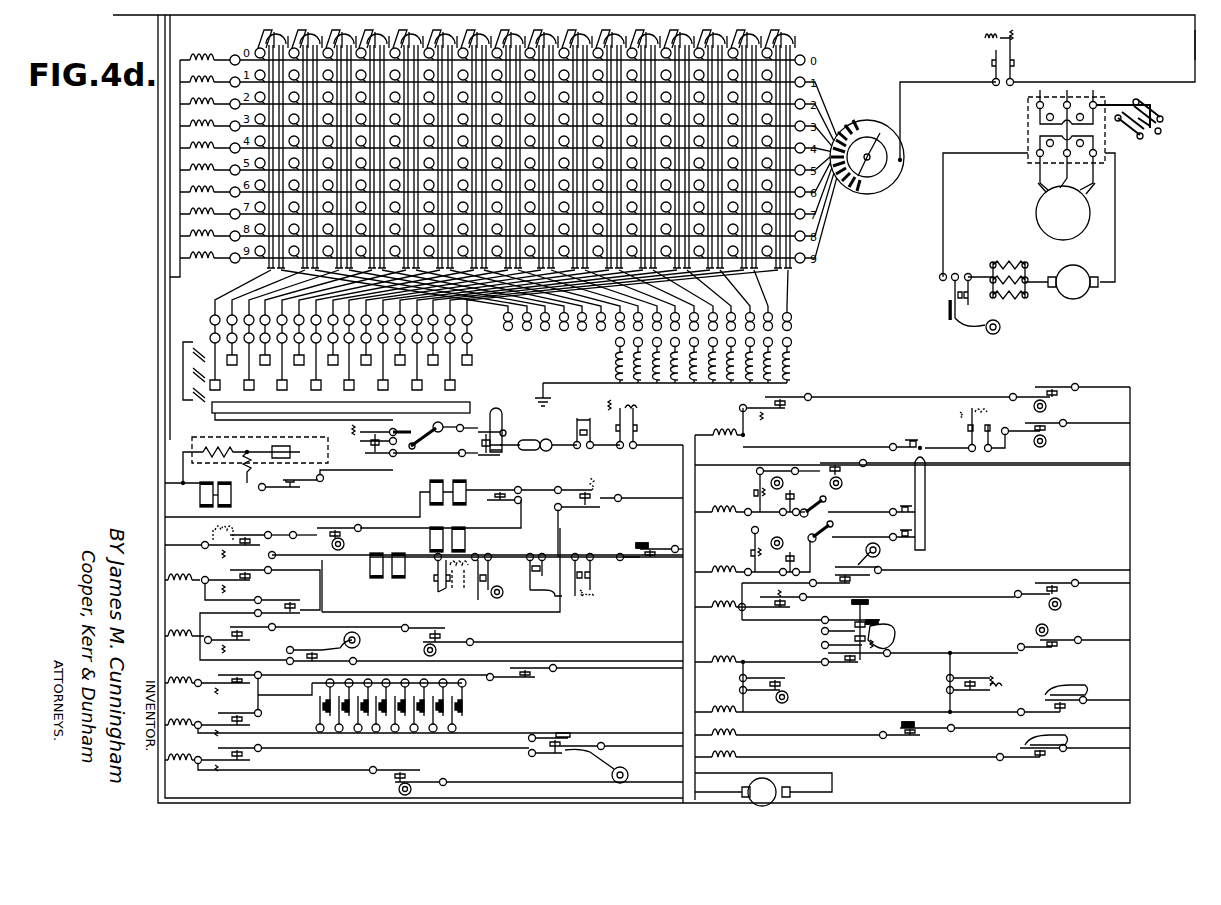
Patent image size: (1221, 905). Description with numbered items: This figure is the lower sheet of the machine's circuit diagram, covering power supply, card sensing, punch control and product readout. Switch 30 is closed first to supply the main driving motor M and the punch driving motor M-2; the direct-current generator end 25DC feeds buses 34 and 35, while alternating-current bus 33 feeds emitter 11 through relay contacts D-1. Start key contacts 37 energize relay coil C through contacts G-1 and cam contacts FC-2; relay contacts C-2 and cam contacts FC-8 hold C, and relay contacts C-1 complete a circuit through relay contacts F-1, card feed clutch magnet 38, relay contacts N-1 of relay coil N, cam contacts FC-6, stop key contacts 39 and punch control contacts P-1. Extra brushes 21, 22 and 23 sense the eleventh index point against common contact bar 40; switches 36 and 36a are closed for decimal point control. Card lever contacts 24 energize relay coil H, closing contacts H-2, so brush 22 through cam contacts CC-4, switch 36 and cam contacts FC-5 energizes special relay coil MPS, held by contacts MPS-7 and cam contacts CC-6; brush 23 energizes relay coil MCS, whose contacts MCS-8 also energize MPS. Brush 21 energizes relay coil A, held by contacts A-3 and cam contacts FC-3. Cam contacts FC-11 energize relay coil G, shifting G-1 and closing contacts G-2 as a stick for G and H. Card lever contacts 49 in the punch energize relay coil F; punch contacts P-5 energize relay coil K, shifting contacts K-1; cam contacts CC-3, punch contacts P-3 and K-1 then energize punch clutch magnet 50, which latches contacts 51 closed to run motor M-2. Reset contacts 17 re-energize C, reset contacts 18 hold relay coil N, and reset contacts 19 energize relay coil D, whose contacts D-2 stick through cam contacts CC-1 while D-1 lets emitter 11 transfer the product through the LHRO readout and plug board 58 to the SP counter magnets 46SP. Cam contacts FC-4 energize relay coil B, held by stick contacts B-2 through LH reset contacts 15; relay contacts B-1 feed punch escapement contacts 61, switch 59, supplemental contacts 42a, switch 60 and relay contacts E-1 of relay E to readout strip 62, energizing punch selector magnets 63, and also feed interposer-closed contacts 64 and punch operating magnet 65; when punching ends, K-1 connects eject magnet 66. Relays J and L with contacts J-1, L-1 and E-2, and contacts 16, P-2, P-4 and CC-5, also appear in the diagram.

The emitter 11 is at (888, 192).
The LH reset contacts 15 is at (560, 756).
The contact 16 is at (576, 740).
The reset contacts 17 is at (862, 578).
The multiplicand reset contacts 18 is at (296, 648).
The reset contacts 19 is at (335, 665).
The extra rate card brush 21 is at (904, 440).
The extra brush 22 is at (903, 501).
The extra brush 23 is at (918, 533).
The card lever contacts 24 is at (1068, 712).
The switch 30 is at (1162, 150).
The bus 33 is at (1195, 55).
The bus 34 is at (160, 32).
The bus 35 is at (165, 46).
The switch 36 is at (830, 506).
The switch 36a is at (836, 534).
The start key contacts 37 is at (895, 636).
The card feed clutch magnet 38 is at (370, 568).
The stop key contacts 39 is at (527, 580).
The common contact bar 40 is at (927, 488).
The supplemental contacts 42a is at (478, 430).
The SP counter magnets 46SP is at (795, 376).
The card lever contacts 49 is at (1045, 760).
The punch clutch magnet 50 is at (466, 540).
The contacts 51 is at (952, 303).
The plug board 58 is at (796, 334).
The switch 59 is at (540, 450).
The switch 60 is at (440, 440).
The punch escapement contacts 61 is at (585, 416).
The readout strip 62 is at (458, 383).
The punch selector magnets 63 is at (190, 172).
The contacts 64 is at (324, 484).
The punch operating magnet 65 is at (232, 500).
The eject magnet 66 is at (428, 495).
The D.C. end of generator 25DC is at (772, 798).
The LHRO readout LHRO is at (853, 43).
The main driving motor M is at (1065, 198).
The punch driving motor M-2 is at (1070, 292).
The relay contacts D-1 is at (1013, 68).
The relay contacts D-2 is at (258, 638).
The relay coil A is at (733, 446).
The relay contacts A-3 is at (795, 404).
The relay coil B is at (642, 408).
The relay contacts B-1 is at (640, 433).
The stick relay contacts B-2 is at (252, 758).
The relay coil C is at (735, 615).
The relay contacts C-1 is at (592, 571).
The relay contacts C-2 is at (785, 605).
The relay E is at (345, 434).
The relay contacts E-1 is at (386, 455).
The relay contact E-2 is at (262, 580).
The relay coil F is at (231, 526).
The relay contacts F-1 is at (280, 529).
The relay coil G is at (736, 655).
The relay contacts G-1 is at (848, 663).
The relay contacts G-2 is at (975, 683).
The relay coil H is at (992, 415).
The relay contacts H-2 is at (968, 438).
The relay J is at (188, 677).
The relay contact J-1 is at (258, 684).
The relay coil K is at (612, 483).
The relay contacts K-1 is at (576, 510).
The relay L is at (188, 720).
The relay contact L-1 is at (258, 720).
The relay coil N is at (452, 592).
The relay contacts N-1 is at (436, 586).
The punch control contacts P-1 is at (654, 556).
The contact P-2 is at (540, 678).
The punch contacts P-3 is at (510, 504).
The contact P-4 is at (312, 611).
The punch contacts P-5 is at (928, 738).
The cam contacts CC-1 is at (452, 636).
The cam contacts CC-3 is at (352, 540).
The cam contacts CC-4 is at (801, 495).
The cam contact CC-5 is at (788, 545).
The cam contacts CC-6 is at (975, 475).
The cam contacts FC-2 is at (1060, 640).
The cam contacts FC-3 is at (1065, 396).
The cam contacts FC-4 is at (420, 780).
The cam contacts FC-5 is at (1060, 432).
The cam contacts FC-6 is at (500, 567).
The cam contacts FC-8 is at (1065, 594).
The cam contacts FC-11 is at (788, 690).
The special relay coil MPS is at (720, 504).
The stick contacts MPS-7 is at (758, 475).
The relay coil MCS is at (720, 560).
The contacts MCS-8 is at (752, 536).